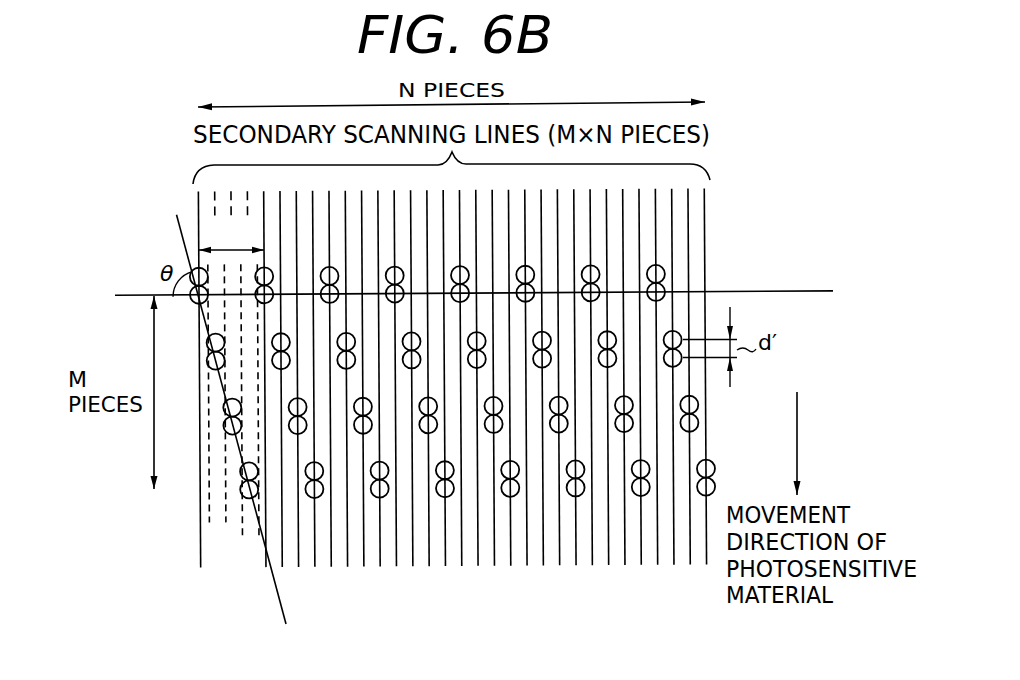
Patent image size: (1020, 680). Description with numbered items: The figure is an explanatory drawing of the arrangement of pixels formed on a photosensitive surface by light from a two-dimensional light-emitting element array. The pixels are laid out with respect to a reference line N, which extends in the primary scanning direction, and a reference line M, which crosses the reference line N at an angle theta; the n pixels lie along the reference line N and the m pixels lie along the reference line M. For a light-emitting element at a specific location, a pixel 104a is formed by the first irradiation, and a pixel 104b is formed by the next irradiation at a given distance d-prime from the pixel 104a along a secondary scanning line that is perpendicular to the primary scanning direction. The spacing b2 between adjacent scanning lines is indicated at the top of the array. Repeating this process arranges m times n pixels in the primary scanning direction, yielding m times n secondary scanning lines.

The pixel 104a is at (667, 287).
The pixel 104b is at (666, 270).
The reference line N is at (793, 289).
The reference line M is at (277, 590).
The scanning line pitch b2 is at (231, 238).